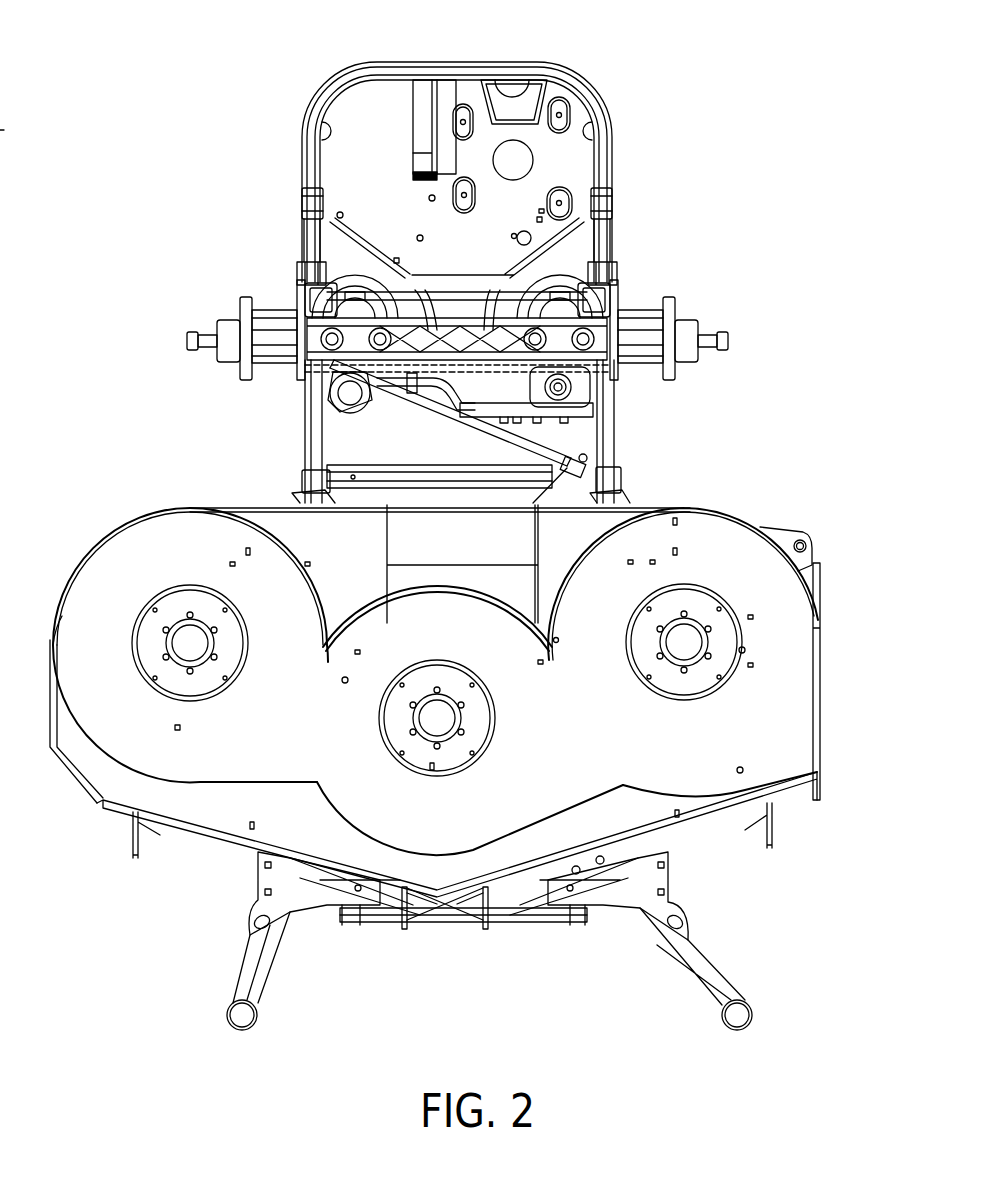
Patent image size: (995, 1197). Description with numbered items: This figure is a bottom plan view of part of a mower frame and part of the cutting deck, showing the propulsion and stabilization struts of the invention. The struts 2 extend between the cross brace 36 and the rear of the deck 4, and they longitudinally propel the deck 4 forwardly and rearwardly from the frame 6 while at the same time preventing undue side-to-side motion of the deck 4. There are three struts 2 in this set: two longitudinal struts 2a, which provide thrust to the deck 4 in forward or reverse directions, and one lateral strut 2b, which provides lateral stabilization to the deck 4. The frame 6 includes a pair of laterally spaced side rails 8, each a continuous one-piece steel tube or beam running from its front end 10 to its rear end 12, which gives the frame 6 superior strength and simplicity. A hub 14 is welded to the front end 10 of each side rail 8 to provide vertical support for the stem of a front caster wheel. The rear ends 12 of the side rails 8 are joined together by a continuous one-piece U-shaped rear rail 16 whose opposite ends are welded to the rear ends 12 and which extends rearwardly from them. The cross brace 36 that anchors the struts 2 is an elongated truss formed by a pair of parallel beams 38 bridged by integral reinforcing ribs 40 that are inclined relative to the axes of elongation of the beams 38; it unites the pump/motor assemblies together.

The struts 2 is at (640, 437).
The longitudinal struts 2a is at (305, 432).
The lateral strut 2b is at (412, 411).
The deck 4 is at (726, 520).
The frame 6 is at (618, 170).
The side rails 8 is at (304, 234).
The front end 10 is at (262, 990).
The rear end 12 is at (303, 205).
The hub 14 is at (233, 1005).
The rear rail 16 is at (466, 62).
The cross brace 36 is at (460, 318).
The beams 38 is at (560, 263).
The reinforcing ribs 40 is at (430, 330).